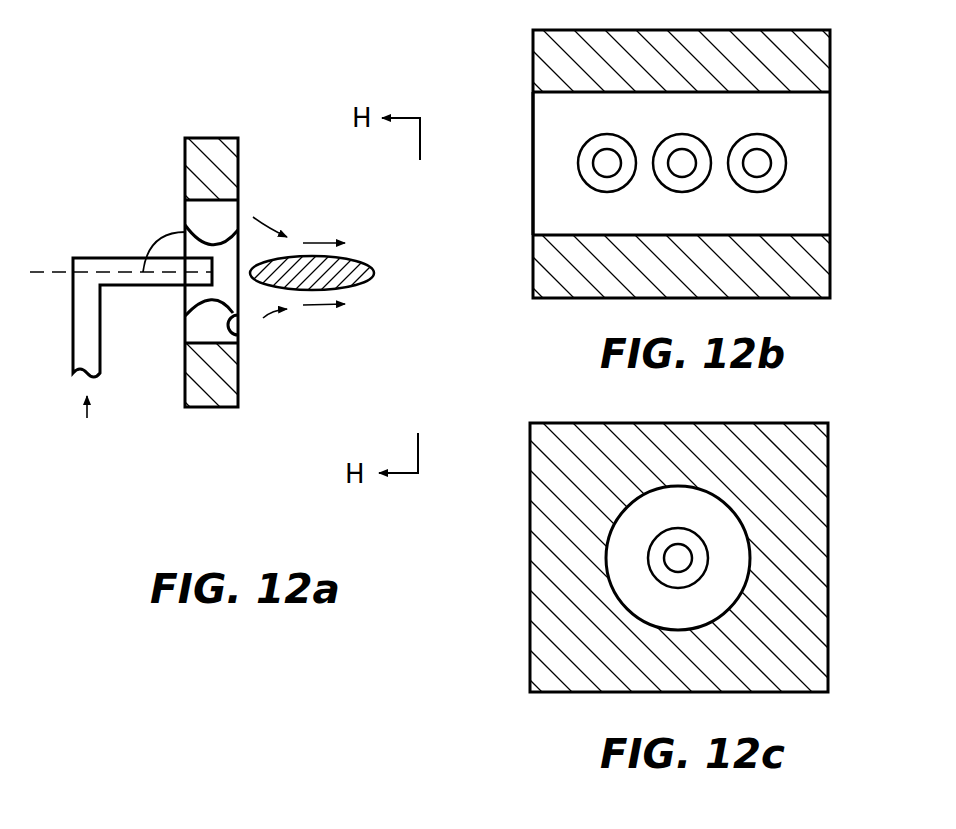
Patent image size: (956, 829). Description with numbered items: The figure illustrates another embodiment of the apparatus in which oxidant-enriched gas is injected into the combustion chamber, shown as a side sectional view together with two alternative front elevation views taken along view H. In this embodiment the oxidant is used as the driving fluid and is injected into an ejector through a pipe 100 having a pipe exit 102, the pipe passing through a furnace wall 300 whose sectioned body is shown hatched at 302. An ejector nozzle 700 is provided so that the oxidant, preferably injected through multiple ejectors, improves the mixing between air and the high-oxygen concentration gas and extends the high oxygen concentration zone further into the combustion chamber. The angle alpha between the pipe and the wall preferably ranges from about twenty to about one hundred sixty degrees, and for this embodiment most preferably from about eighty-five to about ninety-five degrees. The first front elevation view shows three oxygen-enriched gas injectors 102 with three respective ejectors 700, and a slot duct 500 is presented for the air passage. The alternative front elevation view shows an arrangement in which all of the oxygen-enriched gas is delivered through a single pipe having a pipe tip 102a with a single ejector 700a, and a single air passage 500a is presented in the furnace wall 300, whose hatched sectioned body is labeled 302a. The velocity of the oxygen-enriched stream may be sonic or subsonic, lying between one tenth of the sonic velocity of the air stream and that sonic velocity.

In FIG. 12a, the pipe 100 is at (98, 258).
In FIG. 12a, the pipe exit 102 is at (212, 266).
In FIG. 12b, the pipe exit 102 is at (617, 153).
In FIG. 12a, the furnace wall 300 is at (205, 155).
In FIG. 12b, the furnace wall 300 is at (788, 30).
In FIG. 12c, the furnace wall 300 is at (787, 423).
In FIG. 12a, the burner block refractory wall 302 is at (238, 148).
In FIG. 12b, the burner block refractory wall 302 is at (812, 59).
In FIG. 12a, the slot duct 500 is at (193, 343).
In FIG. 12b, the slot duct 500 is at (557, 92).
In FIG. 12a, the ejector nozzle 700 is at (238, 342).
In FIG. 12b, the ejector nozzle 700 is at (736, 184).
In FIG. 12c, the pipe tip 102a is at (668, 547).
In FIG. 12c, the burner block refractory wall (single-port variant) 302a is at (808, 453).
In FIG. 12c, the air passage 500a is at (628, 610).
In FIG. 12c, the ejector 700a is at (657, 579).